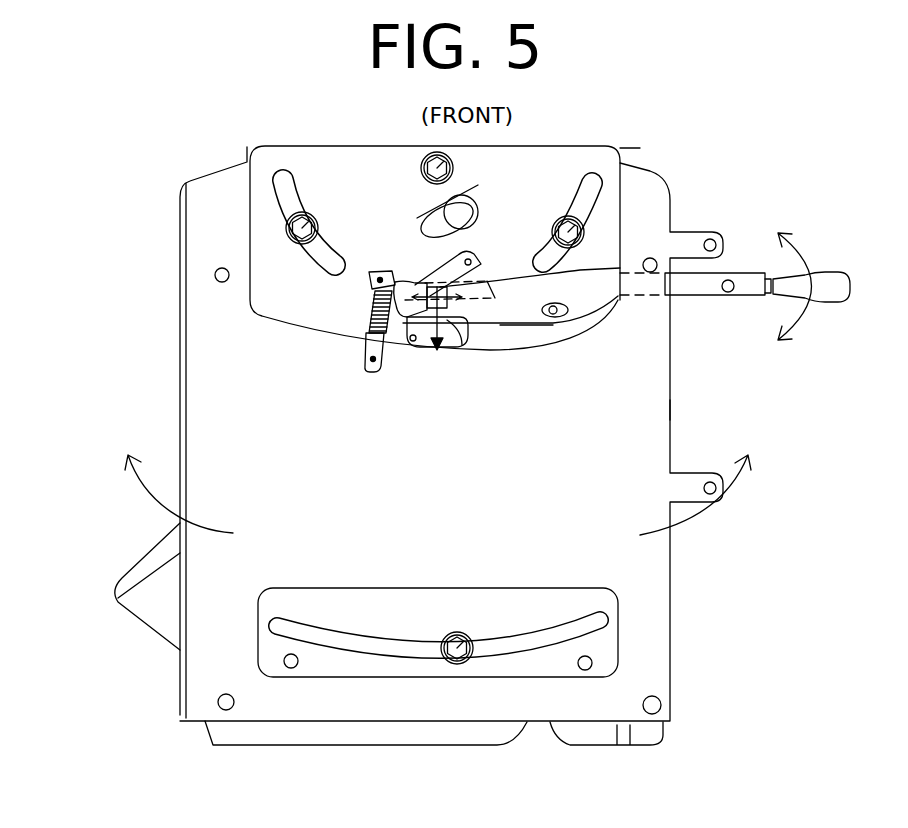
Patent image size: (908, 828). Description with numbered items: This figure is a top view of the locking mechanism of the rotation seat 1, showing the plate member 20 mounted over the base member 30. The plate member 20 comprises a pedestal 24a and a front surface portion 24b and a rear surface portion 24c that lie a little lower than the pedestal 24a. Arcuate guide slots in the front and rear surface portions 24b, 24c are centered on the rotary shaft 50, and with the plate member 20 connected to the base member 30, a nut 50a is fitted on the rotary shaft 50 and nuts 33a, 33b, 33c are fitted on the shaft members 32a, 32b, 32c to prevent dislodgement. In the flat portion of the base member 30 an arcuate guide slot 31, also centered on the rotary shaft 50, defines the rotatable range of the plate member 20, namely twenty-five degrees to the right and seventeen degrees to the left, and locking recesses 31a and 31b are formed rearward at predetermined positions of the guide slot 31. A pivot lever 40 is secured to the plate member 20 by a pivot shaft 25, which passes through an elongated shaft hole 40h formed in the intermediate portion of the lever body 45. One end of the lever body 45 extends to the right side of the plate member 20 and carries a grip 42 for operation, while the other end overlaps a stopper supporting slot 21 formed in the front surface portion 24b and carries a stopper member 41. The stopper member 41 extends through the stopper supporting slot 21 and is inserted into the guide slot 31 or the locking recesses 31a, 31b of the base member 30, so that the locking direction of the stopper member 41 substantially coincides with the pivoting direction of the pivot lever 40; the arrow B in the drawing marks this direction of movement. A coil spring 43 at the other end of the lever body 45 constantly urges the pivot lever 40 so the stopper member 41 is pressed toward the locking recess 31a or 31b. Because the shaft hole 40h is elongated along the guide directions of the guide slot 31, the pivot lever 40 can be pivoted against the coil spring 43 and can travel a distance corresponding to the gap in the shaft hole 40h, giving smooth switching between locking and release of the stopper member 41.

The seat lifter device 1 is at (743, 194).
The plate member 20 is at (713, 407).
The stopper supporting slot 21 is at (447, 320).
The pedestal 24a is at (640, 587).
The front surface portion 24b is at (328, 310).
The rear surface portion 24c is at (318, 663).
The pivot shaft 25 is at (575, 323).
The base member 30 is at (153, 615).
The guide slot 31 is at (381, 278).
The locking recess 31a is at (390, 335).
The locking recess 31b is at (432, 347).
The shaft member 32a is at (309, 222).
The shaft member 32b is at (567, 222).
The shaft member 32c is at (438, 635).
The nut 33a is at (301, 247).
The nut 33b is at (553, 231).
The nut 33c is at (462, 662).
The pivot lever 40 is at (699, 310).
The shaft hole 40h is at (572, 312).
The stopper member 41 is at (470, 283).
The grip 42 is at (838, 293).
The coil spring 43 is at (358, 345).
The lever body 45 is at (705, 283).
The rotary shaft 50 is at (447, 215).
The nut 50a is at (452, 162).
The direction B is at (441, 345).